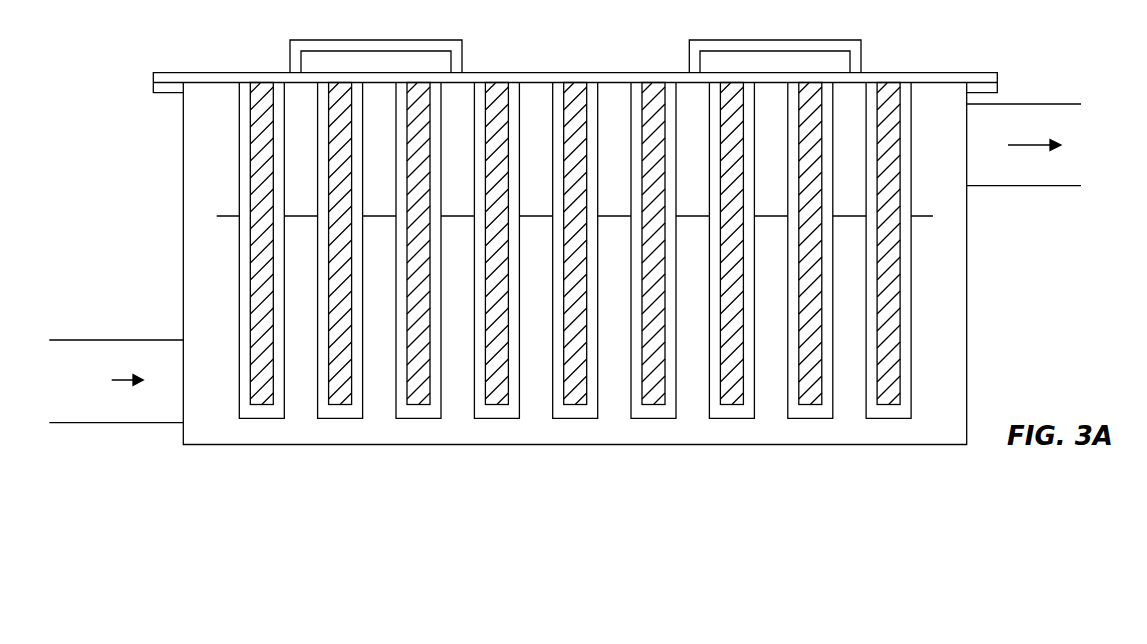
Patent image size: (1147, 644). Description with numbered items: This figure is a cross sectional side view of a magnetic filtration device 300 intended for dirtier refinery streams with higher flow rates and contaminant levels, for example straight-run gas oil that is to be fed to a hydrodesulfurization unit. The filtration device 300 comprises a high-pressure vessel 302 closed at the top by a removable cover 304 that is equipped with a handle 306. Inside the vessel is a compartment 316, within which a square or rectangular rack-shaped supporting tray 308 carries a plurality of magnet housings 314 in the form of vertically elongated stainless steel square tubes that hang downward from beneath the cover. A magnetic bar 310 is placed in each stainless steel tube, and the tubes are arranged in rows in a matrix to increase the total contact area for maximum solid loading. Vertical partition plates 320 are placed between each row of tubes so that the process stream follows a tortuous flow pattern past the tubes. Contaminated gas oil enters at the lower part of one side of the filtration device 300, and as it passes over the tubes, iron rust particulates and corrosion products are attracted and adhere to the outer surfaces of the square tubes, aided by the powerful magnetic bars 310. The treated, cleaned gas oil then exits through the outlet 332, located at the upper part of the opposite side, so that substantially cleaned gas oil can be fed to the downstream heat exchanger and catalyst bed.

The filtration device 300 is at (588, 229).
The high-pressure vessel 302 is at (968, 368).
The removable cover 304 is at (188, 72).
The handle 306 is at (863, 43).
The supporting tray 308 is at (915, 217).
The magnetic bar 310 is at (250, 127).
The magnet housing 314 is at (238, 193).
The compartment 316 is at (213, 253).
The vertical partition plate 320 is at (131, 339).
The outlet 332 is at (1020, 102).